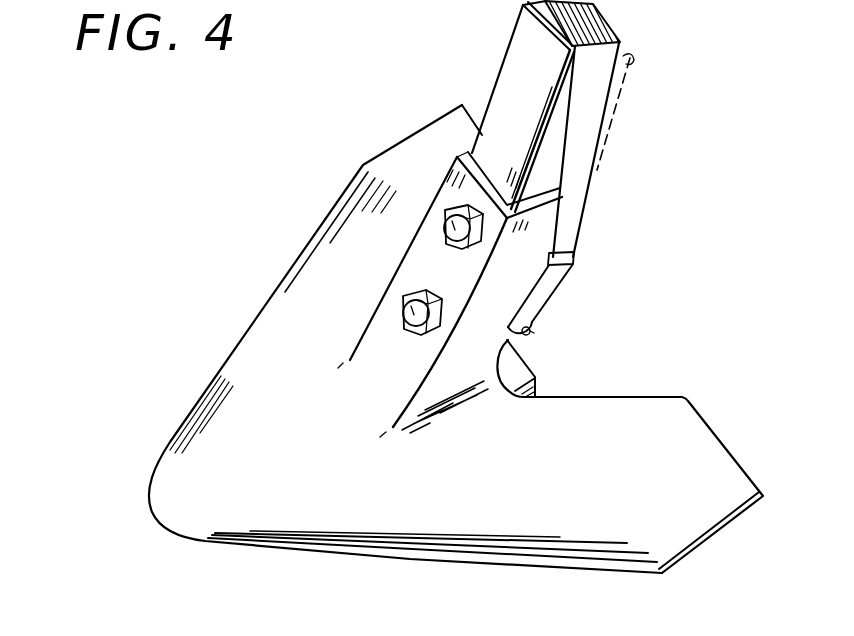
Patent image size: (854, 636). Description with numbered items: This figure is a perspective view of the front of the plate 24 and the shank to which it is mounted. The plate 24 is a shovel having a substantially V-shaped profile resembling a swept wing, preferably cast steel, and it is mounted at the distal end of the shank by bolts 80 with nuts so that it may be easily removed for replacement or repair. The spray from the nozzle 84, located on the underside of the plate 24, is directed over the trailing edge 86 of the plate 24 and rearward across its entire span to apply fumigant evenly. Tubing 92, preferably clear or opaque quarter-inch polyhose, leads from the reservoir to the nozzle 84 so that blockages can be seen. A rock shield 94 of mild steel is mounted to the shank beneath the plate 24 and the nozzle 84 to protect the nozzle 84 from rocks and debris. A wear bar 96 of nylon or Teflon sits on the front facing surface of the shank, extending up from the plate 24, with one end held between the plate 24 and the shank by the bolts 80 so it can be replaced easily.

The plate 24 is at (197, 447).
The bolts 80 is at (443, 238).
The nozzle 84 is at (537, 330).
The trailing edge 86 is at (650, 410).
The tubing 92 is at (587, 167).
The rock shield 94 is at (518, 378).
The wear bar 96 is at (535, 73).